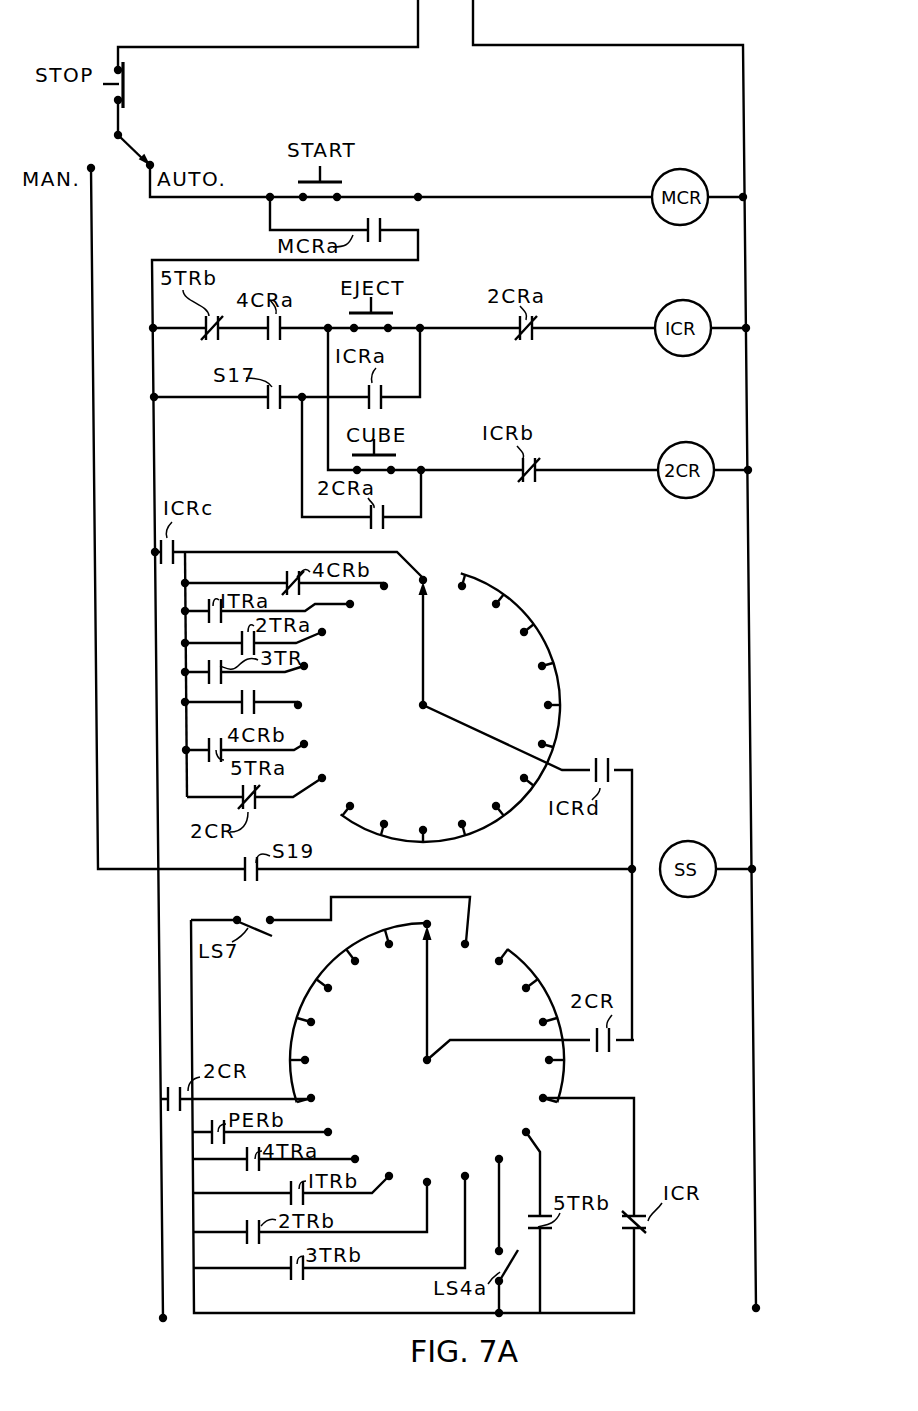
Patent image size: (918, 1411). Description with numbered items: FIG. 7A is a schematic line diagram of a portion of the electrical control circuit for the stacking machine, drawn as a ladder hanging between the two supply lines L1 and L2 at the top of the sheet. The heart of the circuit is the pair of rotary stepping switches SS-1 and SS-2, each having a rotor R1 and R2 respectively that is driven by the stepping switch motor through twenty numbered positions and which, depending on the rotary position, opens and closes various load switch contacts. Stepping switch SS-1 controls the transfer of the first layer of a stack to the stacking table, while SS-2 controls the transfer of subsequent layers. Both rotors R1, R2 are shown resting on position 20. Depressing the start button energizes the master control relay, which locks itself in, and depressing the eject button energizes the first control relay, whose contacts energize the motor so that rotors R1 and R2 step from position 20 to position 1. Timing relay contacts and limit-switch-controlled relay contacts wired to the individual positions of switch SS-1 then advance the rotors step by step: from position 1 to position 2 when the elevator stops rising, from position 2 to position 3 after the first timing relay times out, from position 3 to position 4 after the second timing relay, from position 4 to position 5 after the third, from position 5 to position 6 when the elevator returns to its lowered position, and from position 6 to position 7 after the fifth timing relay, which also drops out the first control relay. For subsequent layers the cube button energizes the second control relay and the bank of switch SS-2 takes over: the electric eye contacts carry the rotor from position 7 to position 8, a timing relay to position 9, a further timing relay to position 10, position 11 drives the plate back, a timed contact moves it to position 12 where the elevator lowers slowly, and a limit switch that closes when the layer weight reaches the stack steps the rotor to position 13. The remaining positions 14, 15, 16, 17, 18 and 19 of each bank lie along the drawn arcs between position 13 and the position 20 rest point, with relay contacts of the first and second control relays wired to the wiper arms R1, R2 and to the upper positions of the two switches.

The stepping switch position 1 is at (390, 776).
The stepping switch position 2 is at (357, 794).
The stepping switch position 3 is at (329, 822).
The stepping switch position 4 is at (314, 846).
The stepping switch position 5 is at (308, 882).
The stepping switch position 6 is at (314, 917).
The stepping switch position 7 is at (335, 950).
The stepping switch position 8 is at (356, 970).
The stepping switch position 9 is at (390, 986).
The stepping switch position 10 is at (424, 992).
The stepping switch position 11 is at (464, 985).
The stepping switch position 12 is at (491, 970).
The stepping switch position 13 is at (516, 947).
The stepping switch position 14 is at (532, 918).
The stepping switch position 15 is at (539, 883).
The stepping switch position 16 is at (533, 845).
The stepping switch position 17 is at (515, 814).
The stepping switch position 18 is at (490, 788).
The stepping switch position 19 is at (454, 771).
The stepping switch position 20 is at (436, 744).
The stepping switch rotor R1 is at (423, 672).
The stepping switch rotor R2 is at (425, 1010).
The rotary stepping switch SS-1 is at (547, 605).
The rotary stepping switch SS-2 is at (548, 962).
The power line L1 is at (415, 23).
The power line L2 is at (474, 23).